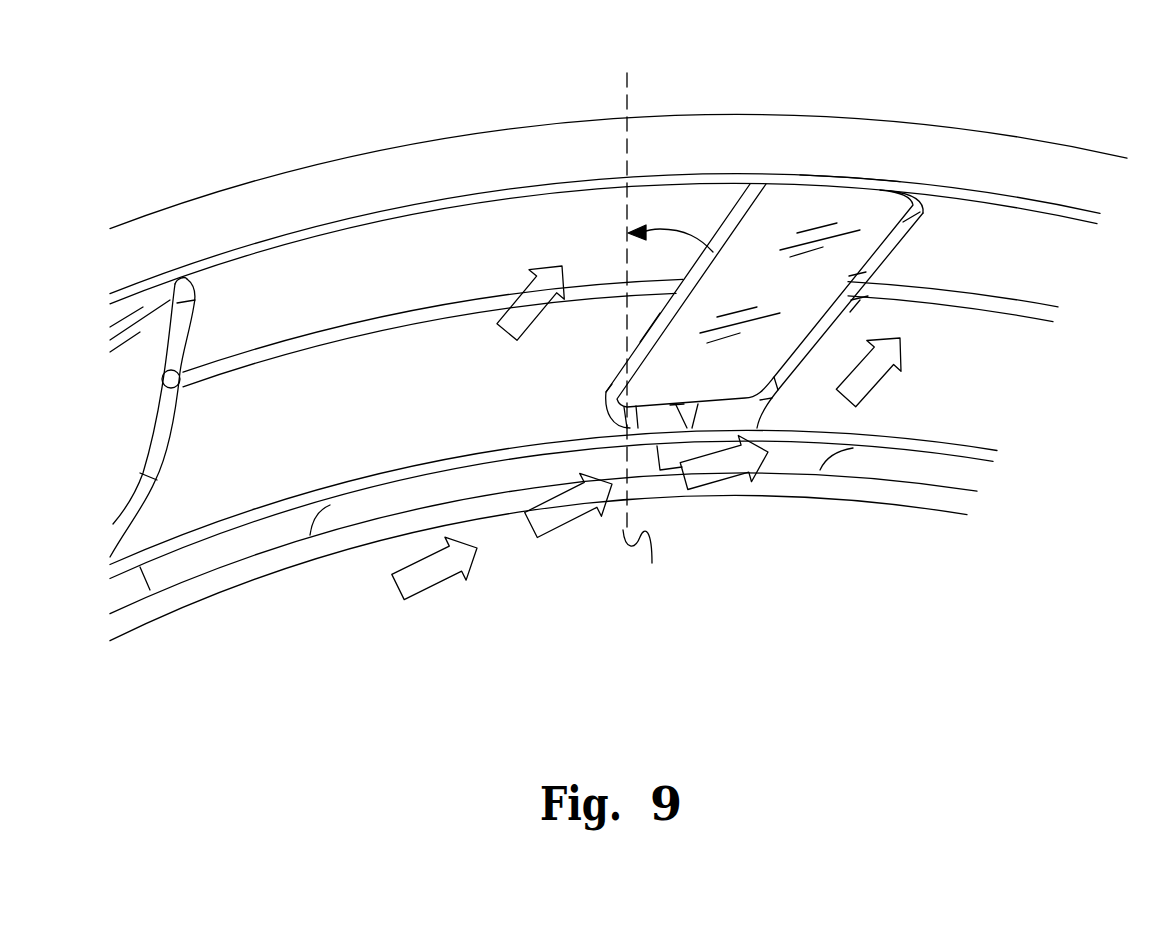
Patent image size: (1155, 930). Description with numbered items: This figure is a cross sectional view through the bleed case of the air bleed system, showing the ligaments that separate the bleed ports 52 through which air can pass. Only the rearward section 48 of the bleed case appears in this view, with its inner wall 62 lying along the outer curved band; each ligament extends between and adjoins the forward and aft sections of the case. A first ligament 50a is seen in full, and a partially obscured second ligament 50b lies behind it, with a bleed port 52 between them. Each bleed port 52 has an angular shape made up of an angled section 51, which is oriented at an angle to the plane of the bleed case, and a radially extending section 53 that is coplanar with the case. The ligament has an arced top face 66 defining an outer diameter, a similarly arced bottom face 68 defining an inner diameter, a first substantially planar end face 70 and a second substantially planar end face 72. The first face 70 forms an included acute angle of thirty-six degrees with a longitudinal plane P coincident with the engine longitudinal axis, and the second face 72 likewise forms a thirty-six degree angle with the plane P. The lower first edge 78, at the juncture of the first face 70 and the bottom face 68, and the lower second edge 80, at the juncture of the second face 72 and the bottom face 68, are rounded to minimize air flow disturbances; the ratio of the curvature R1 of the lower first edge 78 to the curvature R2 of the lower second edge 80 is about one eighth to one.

The rearward section 48 is at (320, 163).
The inner wall 62 is at (413, 197).
The arced top face 66 is at (852, 180).
The radially extending section 53 is at (421, 282).
The angled section 51 is at (426, 418).
The bleed port 52 is at (371, 449).
The first ligament 50a is at (742, 382).
The second ligament 50b is at (143, 500).
The longitudinal plane P is at (630, 102).
The first substantially planar end face 70 is at (640, 337).
The curvature of the lower first edge R1 is at (598, 397).
The curvature of the lower second edge R2 is at (770, 403).
The second substantially planar end face 72 is at (857, 317).
The lower first edge 78 is at (644, 564).
The arced bottom face 68 is at (677, 407).
The lower second edge 80 is at (767, 403).